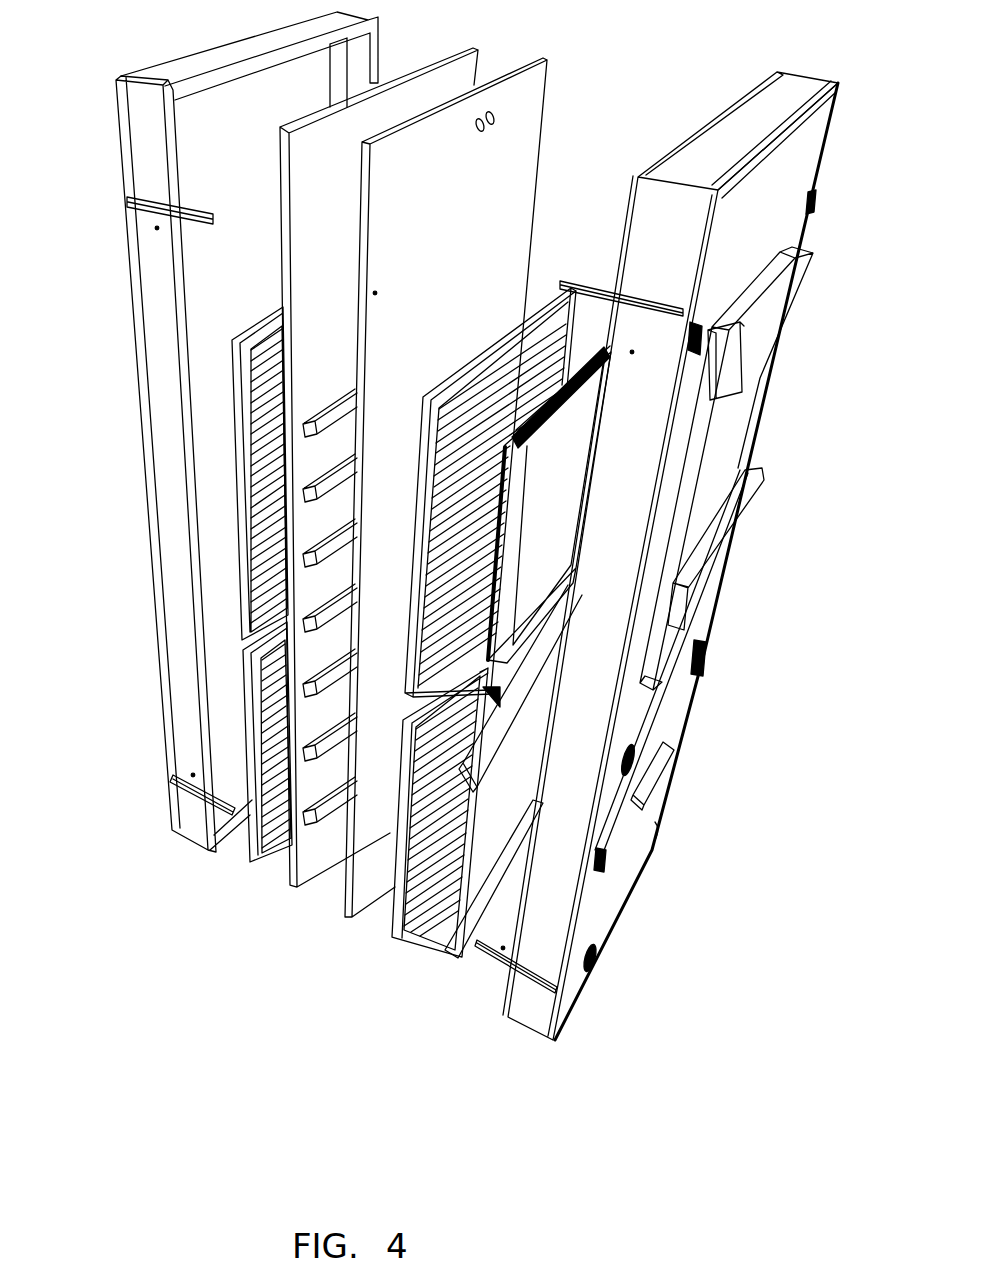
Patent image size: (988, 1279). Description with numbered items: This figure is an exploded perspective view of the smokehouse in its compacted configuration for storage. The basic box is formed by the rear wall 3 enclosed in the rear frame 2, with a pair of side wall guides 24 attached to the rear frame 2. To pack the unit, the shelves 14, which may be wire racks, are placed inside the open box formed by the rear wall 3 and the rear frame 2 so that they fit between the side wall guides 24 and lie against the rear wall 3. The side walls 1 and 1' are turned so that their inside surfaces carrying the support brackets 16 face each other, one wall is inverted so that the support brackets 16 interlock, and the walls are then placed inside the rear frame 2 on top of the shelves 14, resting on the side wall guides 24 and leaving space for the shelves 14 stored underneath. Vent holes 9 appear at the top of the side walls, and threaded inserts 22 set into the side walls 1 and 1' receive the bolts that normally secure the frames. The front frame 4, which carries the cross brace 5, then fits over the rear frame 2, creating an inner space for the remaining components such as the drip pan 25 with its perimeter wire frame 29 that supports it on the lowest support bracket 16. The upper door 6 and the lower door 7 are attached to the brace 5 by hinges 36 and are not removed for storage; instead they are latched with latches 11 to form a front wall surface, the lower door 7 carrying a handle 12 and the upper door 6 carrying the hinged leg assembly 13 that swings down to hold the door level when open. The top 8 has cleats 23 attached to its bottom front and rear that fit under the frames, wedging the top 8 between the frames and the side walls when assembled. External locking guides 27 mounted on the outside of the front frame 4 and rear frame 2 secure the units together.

The side wall 1 is at (385, 448).
The side wall 1' is at (465, 460).
The rear frame 2 is at (123, 112).
The rear wall 3 is at (220, 98).
The front frame 4 is at (795, 82).
The front brace 5 is at (707, 638).
The upper door 6 is at (657, 830).
The lower door 7 is at (810, 152).
The top 8 is at (443, 949).
The smoke vents 9 is at (495, 117).
The latches 11 is at (822, 203).
The handle 12 is at (667, 763).
The hinged leg assembly 13 is at (757, 485).
The shelves 14 is at (258, 322).
The support brackets 16 is at (305, 832).
The threaded inserts 22 is at (375, 293).
The cleats 23 is at (452, 960).
The side wall guides 24 is at (337, 75).
The drip pan 25 is at (567, 455).
The external locking guides 27 is at (128, 198).
The wire frame 29 is at (500, 540).
The hinges 36 is at (628, 752).